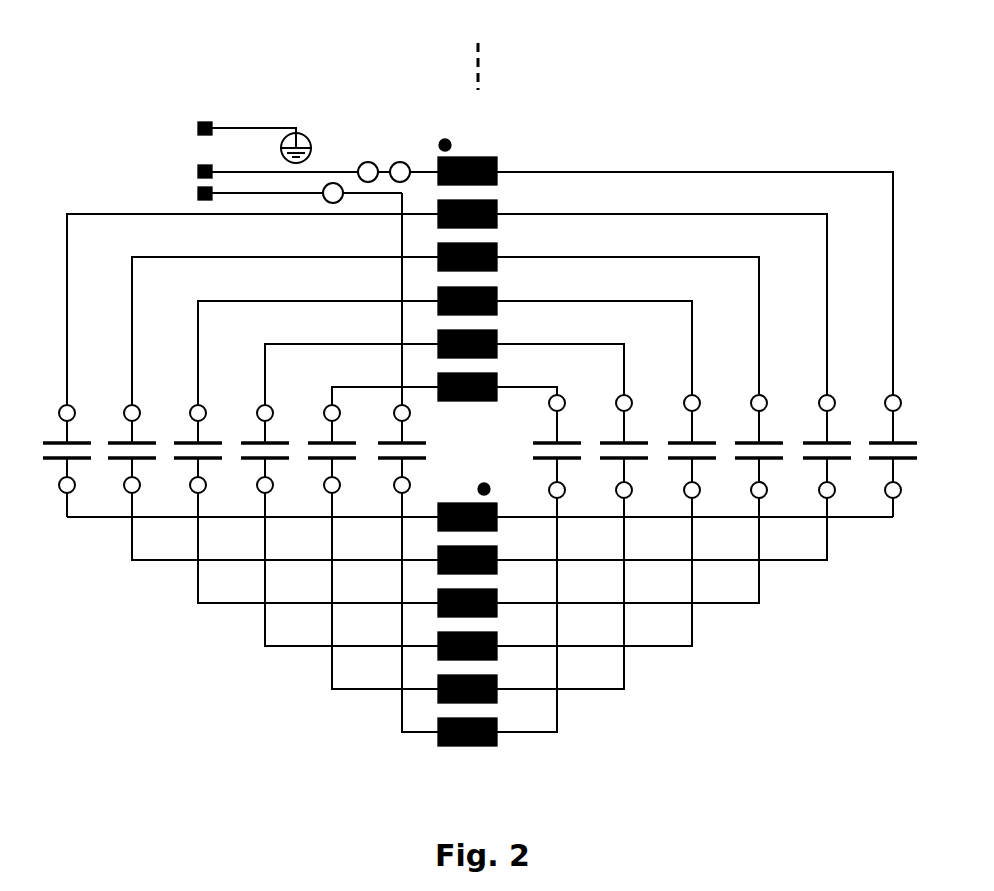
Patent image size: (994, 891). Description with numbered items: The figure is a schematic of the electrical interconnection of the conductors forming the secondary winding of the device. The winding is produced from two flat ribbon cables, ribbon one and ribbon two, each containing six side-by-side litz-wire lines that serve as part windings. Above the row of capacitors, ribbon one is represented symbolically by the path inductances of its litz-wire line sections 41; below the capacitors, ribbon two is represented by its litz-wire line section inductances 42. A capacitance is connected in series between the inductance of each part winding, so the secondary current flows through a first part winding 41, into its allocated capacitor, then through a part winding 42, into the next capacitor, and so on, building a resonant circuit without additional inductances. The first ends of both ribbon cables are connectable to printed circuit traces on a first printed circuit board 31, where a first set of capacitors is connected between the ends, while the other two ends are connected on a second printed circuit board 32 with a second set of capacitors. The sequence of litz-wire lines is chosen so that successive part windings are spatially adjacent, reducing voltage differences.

The first printed circuit board 31 is at (733, 82).
The second printed circuit board 32 is at (263, 75).
The flat ribbon cable with associated path inductances of the litz-wire line section 41 is at (497, 158).
The flat ribbon cable with associated path inductances of the litz-wire line section 42 is at (497, 746).